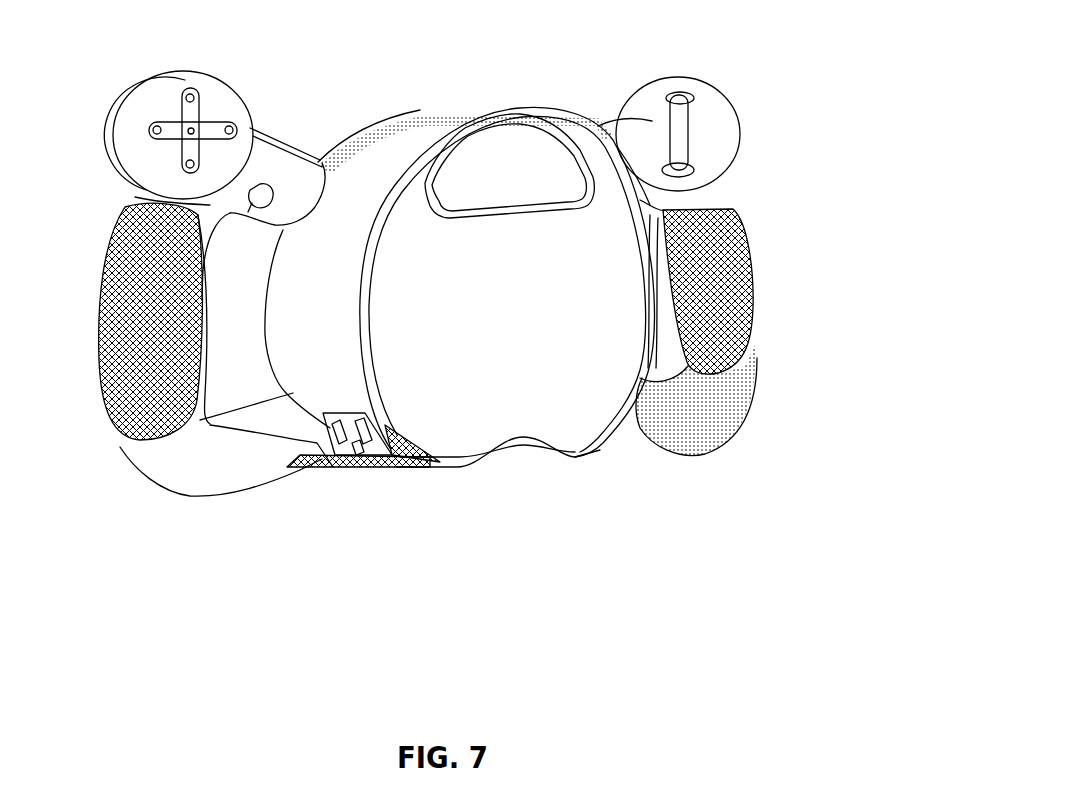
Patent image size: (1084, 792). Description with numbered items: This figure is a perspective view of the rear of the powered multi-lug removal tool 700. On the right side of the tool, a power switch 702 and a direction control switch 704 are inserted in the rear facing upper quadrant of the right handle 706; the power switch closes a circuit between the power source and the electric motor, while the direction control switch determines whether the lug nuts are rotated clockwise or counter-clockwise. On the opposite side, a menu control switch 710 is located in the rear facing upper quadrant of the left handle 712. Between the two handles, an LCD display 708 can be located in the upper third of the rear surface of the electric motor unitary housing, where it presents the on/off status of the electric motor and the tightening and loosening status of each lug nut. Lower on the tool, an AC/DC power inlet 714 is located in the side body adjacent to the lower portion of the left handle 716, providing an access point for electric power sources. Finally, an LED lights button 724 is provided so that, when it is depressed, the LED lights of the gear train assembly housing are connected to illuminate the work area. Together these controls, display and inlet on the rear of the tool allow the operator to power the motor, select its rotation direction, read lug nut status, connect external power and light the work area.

The powered multi-lug removal tool 700 is at (342, 268).
The power switch 702 is at (650, 196).
The direction control switch 704 is at (690, 130).
The right handle 706 is at (620, 153).
The LCD display 708 is at (521, 160).
The menu control switch 710 is at (275, 140).
The left handle 712 is at (250, 160).
The AC/DC power inlet 714 is at (368, 460).
The left handle 716 is at (302, 468).
The LED lights button 724 is at (247, 197).